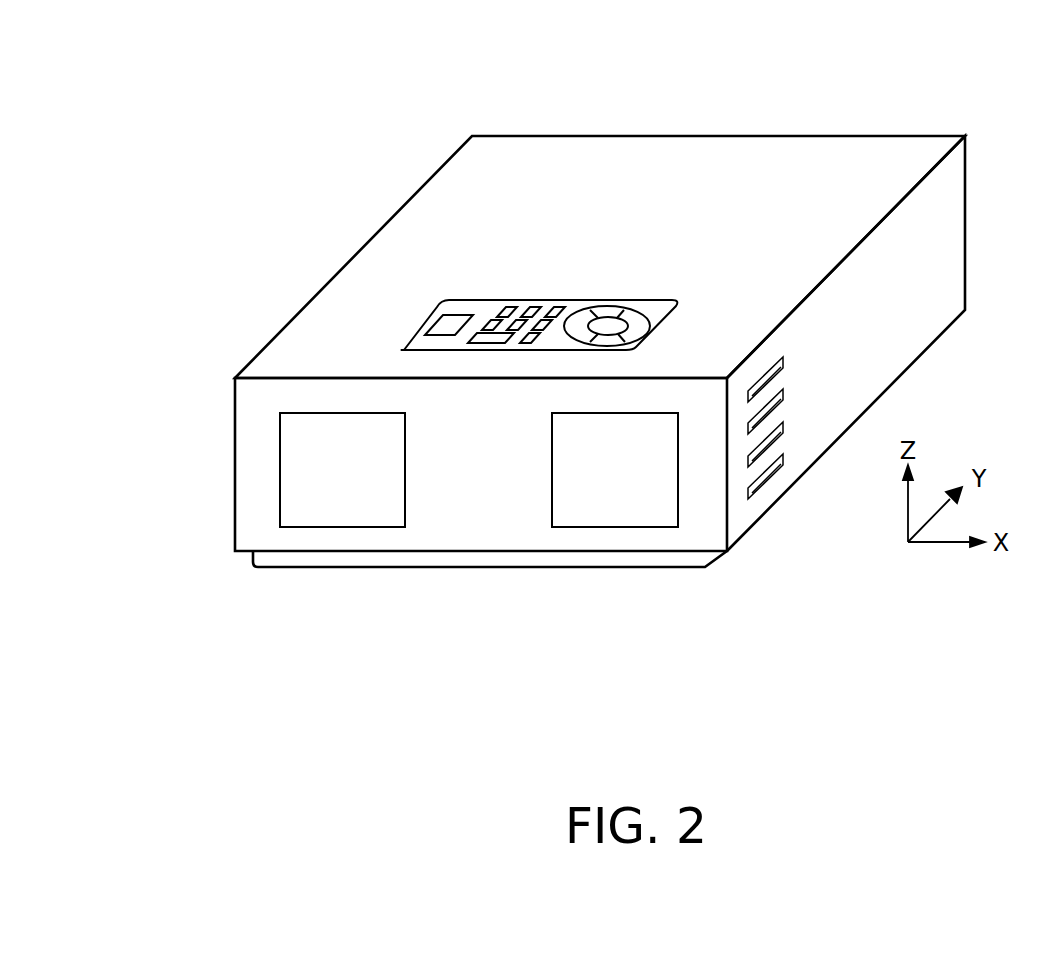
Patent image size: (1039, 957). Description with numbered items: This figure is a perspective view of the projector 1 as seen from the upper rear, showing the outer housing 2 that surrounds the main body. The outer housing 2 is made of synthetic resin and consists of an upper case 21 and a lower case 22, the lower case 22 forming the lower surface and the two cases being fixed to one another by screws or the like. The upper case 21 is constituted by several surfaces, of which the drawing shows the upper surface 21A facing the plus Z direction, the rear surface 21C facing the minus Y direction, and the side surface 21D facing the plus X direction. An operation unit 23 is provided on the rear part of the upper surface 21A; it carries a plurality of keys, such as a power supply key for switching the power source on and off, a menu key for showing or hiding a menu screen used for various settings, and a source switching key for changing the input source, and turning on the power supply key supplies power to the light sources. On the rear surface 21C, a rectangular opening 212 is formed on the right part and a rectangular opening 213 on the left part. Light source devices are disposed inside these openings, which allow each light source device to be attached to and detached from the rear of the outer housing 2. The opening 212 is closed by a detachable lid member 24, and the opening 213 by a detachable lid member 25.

The projector 1 is at (975, 103).
The outer housing 2 is at (797, 552).
The upper case 21 is at (740, 498).
The upper surface 21A is at (404, 238).
The rear surface 21C is at (252, 469).
The side surface 21D is at (897, 347).
The lower case 22 is at (678, 558).
The operation unit 23 is at (487, 312).
The lid member 24 is at (626, 478).
The lid member 25 is at (353, 478).
The rectangular opening 212 is at (552, 488).
The rectangular opening 213 is at (280, 488).